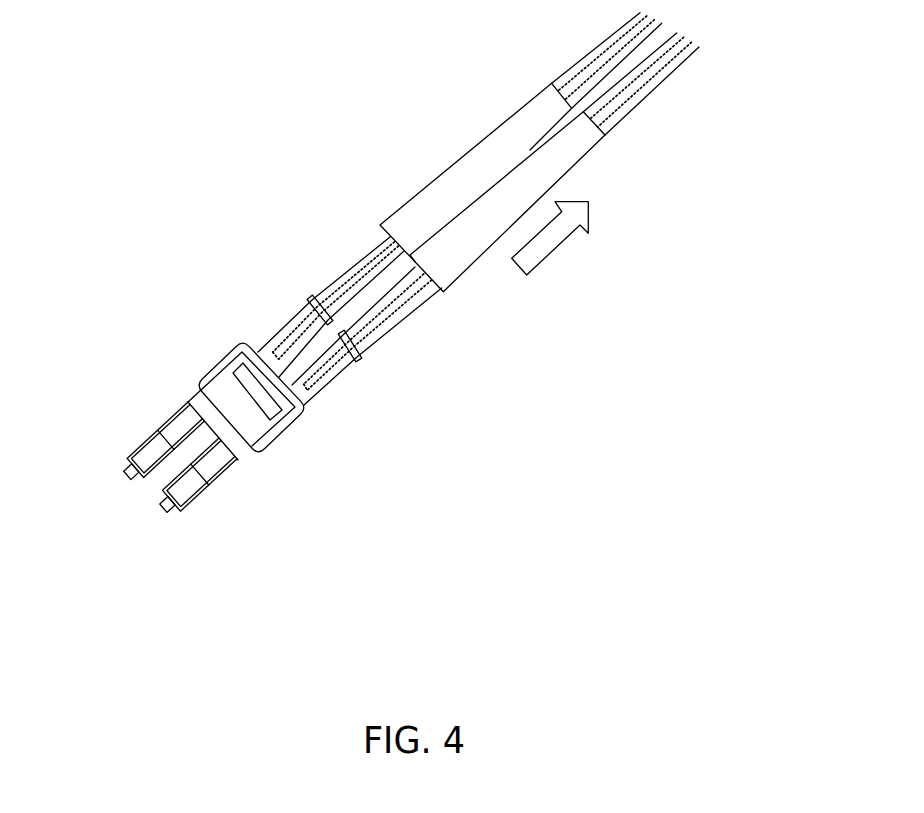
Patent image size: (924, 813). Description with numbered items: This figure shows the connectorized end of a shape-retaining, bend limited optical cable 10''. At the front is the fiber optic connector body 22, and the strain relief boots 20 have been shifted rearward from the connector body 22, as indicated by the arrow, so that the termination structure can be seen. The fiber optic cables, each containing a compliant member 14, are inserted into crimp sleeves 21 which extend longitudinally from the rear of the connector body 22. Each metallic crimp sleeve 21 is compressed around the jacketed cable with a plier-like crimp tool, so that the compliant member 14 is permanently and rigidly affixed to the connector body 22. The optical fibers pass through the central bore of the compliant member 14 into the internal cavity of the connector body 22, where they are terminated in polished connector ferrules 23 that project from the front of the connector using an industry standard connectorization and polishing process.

The fiber optic cable assembly 10'' is at (695, 91).
The compliant member 14 is at (311, 311).
The strain relief boot 20 is at (462, 177).
The crimp sleeve 21 is at (347, 376).
The connector body 22 is at (228, 405).
The connector ferrule 23 is at (150, 521).